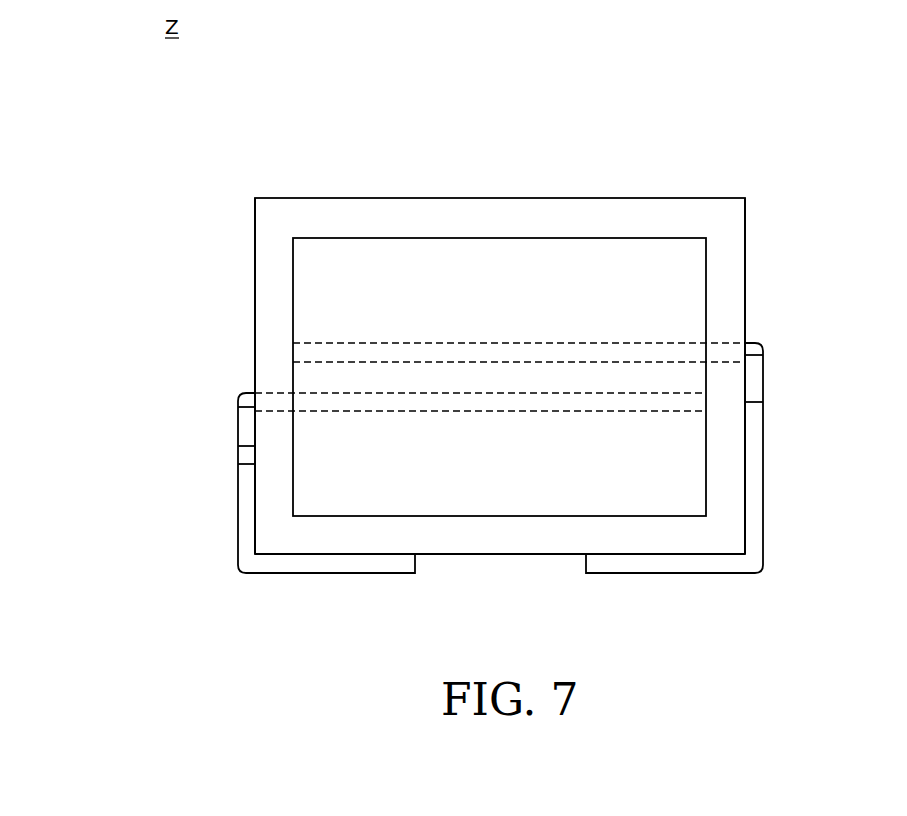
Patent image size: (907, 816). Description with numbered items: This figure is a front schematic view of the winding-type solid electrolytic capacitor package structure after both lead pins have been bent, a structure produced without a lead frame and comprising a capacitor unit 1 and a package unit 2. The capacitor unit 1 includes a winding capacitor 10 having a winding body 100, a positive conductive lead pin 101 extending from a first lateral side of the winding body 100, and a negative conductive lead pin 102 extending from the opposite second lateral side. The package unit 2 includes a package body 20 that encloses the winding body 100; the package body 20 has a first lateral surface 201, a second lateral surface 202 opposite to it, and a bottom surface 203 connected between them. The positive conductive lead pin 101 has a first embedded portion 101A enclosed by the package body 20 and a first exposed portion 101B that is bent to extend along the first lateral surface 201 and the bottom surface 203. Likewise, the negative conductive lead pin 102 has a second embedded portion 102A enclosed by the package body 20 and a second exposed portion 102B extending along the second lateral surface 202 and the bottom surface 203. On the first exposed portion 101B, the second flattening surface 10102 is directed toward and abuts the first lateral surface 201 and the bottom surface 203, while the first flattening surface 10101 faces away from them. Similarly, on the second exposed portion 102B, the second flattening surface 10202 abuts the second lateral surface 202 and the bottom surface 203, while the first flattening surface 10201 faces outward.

The capacitor unit 1 is at (367, 140).
The winding capacitor 10 is at (362, 238).
The winding body 100 is at (457, 250).
The positive conductive lead pin 101 is at (147, 360).
The first embedded portion 101A is at (275, 400).
The first exposed portion 101B is at (246, 428).
The negative conductive lead pin 102 is at (857, 312).
The second embedded portion 102A is at (724, 357).
The second exposed portion 102B is at (753, 381).
The package unit 2 is at (741, 130).
The package body 20 is at (692, 198).
The first lateral surface 201 is at (255, 272).
The second lateral surface 202 is at (746, 272).
The bottom surface 203 is at (493, 556).
The first flattening surface 10101 is at (238, 507).
The second flattening surface 10102 is at (256, 487).
The first flattening surface 10201 is at (765, 506).
The second flattening surface 10202 is at (745, 484).